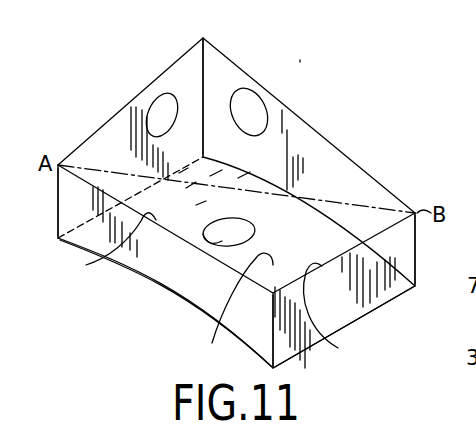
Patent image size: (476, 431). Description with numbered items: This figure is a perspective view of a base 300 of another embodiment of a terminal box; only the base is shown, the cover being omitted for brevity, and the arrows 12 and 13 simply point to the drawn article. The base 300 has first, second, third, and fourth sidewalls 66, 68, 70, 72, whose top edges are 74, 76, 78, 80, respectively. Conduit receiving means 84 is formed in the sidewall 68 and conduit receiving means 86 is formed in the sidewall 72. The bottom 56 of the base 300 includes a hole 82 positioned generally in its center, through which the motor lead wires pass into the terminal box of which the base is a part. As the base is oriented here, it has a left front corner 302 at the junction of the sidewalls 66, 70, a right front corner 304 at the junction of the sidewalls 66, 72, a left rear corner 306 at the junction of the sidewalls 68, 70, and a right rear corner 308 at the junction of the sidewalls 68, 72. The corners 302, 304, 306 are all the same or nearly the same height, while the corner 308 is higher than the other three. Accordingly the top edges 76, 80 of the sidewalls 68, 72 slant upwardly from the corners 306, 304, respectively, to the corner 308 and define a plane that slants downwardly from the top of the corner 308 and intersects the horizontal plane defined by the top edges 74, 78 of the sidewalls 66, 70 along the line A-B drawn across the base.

The block 12 is at (386, 322).
The upright panel portion 13 is at (128, 296).
The bottom 56 is at (230, 312).
The first sidewall 66 is at (384, 293).
The second sidewall 68 is at (114, 138).
The third sidewall 70 is at (213, 298).
The fourth sidewall 72 is at (301, 132).
The top edge 74 is at (338, 348).
The top edge 76 is at (126, 103).
The top edge 78 is at (106, 232).
The top edge 80 is at (331, 145).
The hole 82 is at (162, 281).
The conduit receiving means 84 is at (168, 98).
The conduit receiving means 86 is at (258, 104).
The base 300 is at (383, 176).
The left front corner 302 is at (287, 362).
The right front corner 304 is at (420, 254).
The left rear corner 306 is at (58, 190).
The right rear corner 308 is at (205, 67).